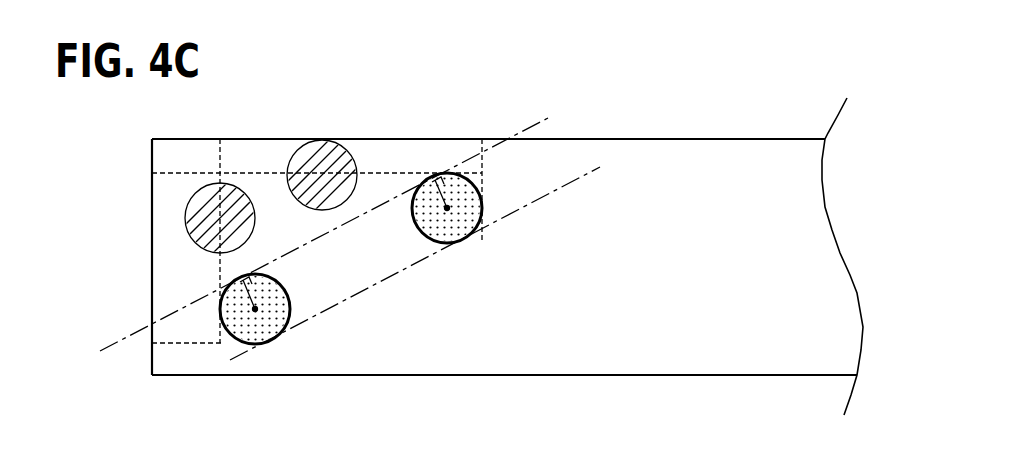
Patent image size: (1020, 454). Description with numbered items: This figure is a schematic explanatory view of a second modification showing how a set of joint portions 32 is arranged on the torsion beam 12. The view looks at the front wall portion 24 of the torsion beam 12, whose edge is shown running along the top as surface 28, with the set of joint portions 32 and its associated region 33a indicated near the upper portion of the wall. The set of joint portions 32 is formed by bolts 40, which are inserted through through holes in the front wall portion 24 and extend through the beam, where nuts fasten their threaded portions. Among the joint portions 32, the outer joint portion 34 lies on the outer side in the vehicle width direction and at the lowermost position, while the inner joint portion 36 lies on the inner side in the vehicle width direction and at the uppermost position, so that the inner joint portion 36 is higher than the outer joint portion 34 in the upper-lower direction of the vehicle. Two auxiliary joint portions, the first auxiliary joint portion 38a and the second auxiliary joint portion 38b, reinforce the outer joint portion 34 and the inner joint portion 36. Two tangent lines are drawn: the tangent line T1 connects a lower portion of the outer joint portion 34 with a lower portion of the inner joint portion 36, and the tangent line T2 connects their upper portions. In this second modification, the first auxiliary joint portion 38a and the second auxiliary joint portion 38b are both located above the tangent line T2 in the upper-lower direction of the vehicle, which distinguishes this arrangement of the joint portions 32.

The torsion beam 12 is at (507, 254).
The front wall portion 24 is at (747, 333).
The upper edge surface 28 is at (733, 139).
The joint portions 32 is at (355, 201).
The first layer portion 33a is at (429, 149).
The outer joint portion 34 is at (288, 325).
The inner joint portion 36 is at (483, 189).
The first auxiliary joint portion 38a is at (247, 186).
The second auxiliary joint portion 38b is at (337, 141).
The bolts 40 is at (190, 190).
The tangent line T1 is at (594, 171).
The tangent line T2 is at (533, 120).